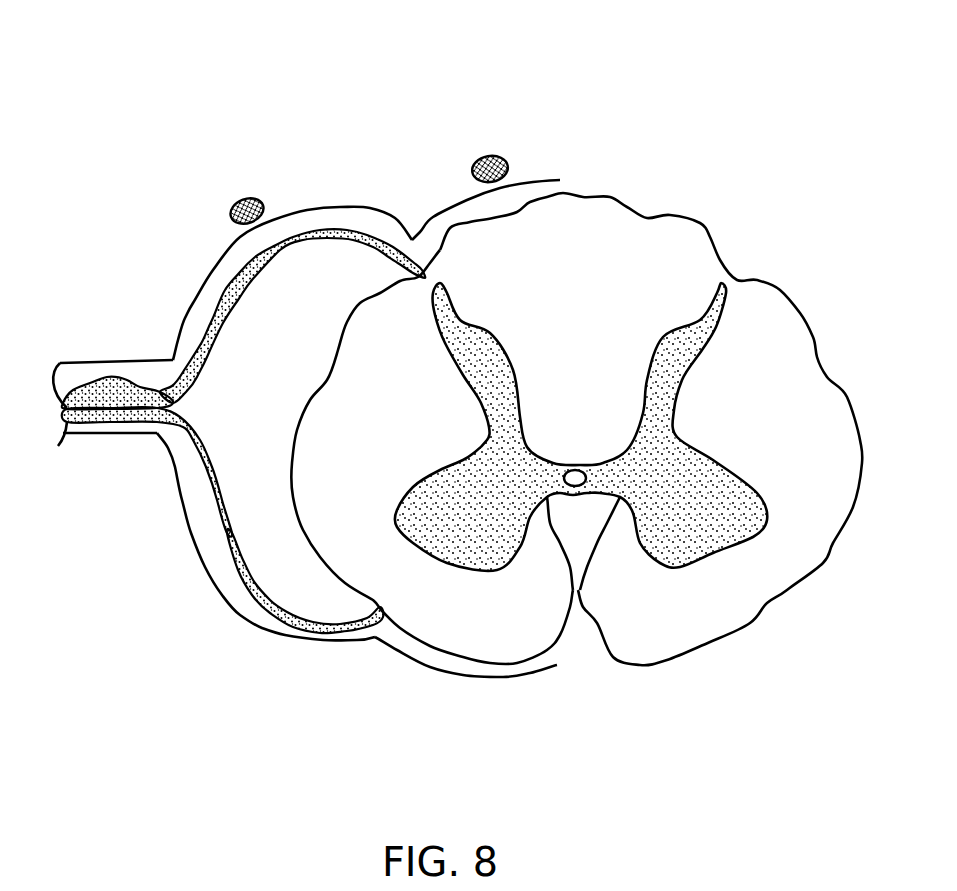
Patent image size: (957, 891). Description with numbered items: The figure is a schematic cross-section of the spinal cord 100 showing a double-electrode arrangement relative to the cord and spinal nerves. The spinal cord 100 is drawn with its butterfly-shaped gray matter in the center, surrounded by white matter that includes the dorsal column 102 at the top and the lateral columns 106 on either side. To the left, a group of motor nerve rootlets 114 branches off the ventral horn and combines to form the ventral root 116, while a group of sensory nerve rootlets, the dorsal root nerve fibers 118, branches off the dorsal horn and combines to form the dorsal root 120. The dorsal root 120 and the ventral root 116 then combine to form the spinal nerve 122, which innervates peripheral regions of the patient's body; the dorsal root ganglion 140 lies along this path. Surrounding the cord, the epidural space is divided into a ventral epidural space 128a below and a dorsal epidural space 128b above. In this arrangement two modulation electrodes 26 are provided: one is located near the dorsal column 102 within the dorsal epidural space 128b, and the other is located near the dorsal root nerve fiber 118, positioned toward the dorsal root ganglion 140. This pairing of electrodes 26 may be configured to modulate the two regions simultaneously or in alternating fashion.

The spinal cord 100 is at (290, 55).
The modulation electrode 26 is at (242, 197).
The dorsal column 102 is at (580, 299).
The lateral columns 106 is at (393, 409).
The motor nerve rootlets 114 is at (353, 626).
The ventral root 116 is at (210, 593).
The dorsal root nerve fibers 118 is at (363, 232).
The dorsal root 120 is at (187, 308).
The spinal nerve 122 is at (90, 415).
The ventral epidural space 128a is at (490, 684).
The dorsal epidural space 128b is at (557, 163).
The dorsal root ganglion 140 is at (100, 395).